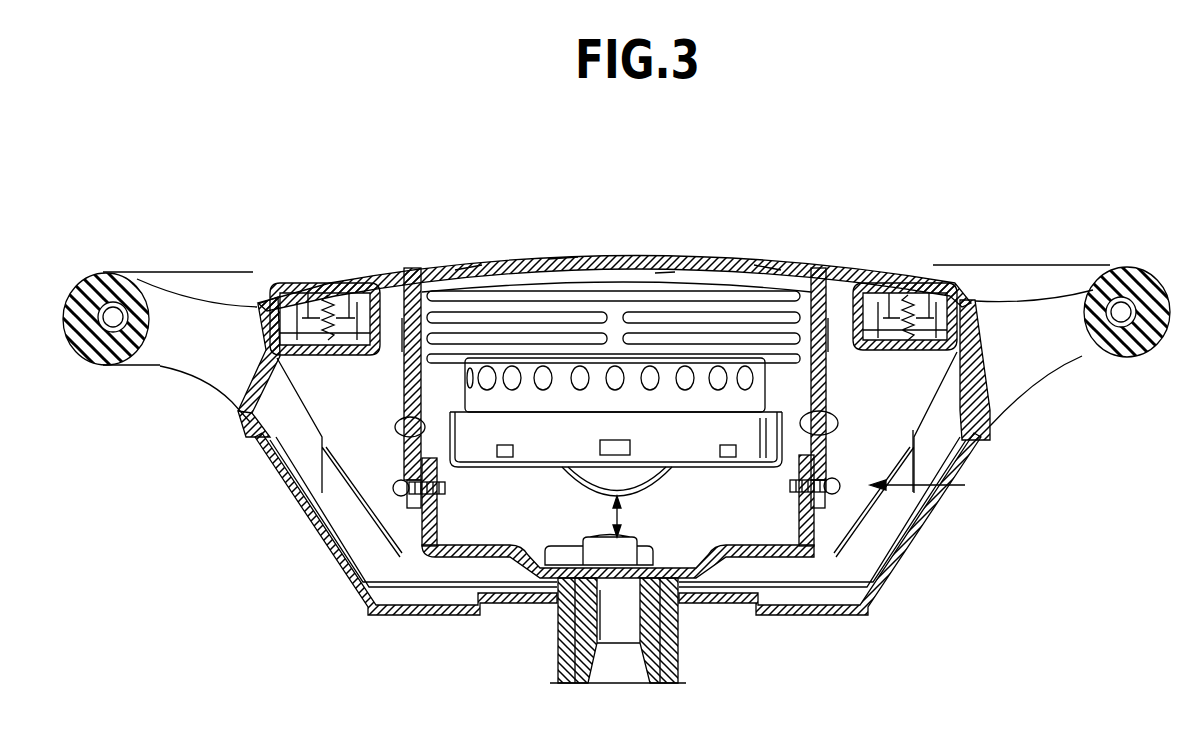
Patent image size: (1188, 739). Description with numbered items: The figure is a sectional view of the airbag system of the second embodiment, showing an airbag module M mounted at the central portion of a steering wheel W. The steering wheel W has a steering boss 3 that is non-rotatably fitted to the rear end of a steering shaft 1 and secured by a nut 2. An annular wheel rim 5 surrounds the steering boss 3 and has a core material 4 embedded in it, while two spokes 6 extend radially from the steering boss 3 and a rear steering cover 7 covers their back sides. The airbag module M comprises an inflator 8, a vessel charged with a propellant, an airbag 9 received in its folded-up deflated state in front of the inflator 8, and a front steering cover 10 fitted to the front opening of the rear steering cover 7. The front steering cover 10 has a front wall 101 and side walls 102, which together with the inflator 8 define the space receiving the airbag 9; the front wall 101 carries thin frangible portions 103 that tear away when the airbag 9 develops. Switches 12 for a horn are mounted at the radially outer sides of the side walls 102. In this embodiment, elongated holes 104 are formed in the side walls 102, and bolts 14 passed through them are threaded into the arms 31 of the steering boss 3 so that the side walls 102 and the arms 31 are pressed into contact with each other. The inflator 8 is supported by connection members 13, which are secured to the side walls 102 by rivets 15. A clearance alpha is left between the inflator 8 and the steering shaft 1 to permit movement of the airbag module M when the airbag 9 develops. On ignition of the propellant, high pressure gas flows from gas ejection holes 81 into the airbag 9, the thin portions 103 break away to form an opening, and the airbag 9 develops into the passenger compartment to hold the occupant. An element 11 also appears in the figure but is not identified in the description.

The steering shaft 1 is at (623, 672).
The nut 2 is at (630, 553).
The steering boss 3 is at (741, 538).
The arms of the steering boss 31 is at (437, 472).
The core material 4 is at (103, 364).
The wheel rim 5 is at (107, 282).
The spokes 6 is at (357, 522).
The rear steering cover 7 is at (888, 570).
The inflator 8 is at (549, 471).
The gas ejection holes 81 is at (648, 386).
The airbag 9 is at (750, 292).
The front steering cover 10 is at (619, 240).
The front wall 101 is at (562, 260).
The side walls 102 is at (397, 335).
The thin frangible portions 103 is at (840, 235).
The elongated holes 104 is at (860, 440).
The tear line 11 is at (663, 270).
The switches for a horn 12 is at (320, 283).
The connection members 13 is at (758, 418).
The bolts 14 is at (398, 482).
The rivets 15 is at (397, 420).
The airbag module M is at (725, 228).
The steering wheel W is at (1082, 256).
The clearance alpha is at (613, 515).